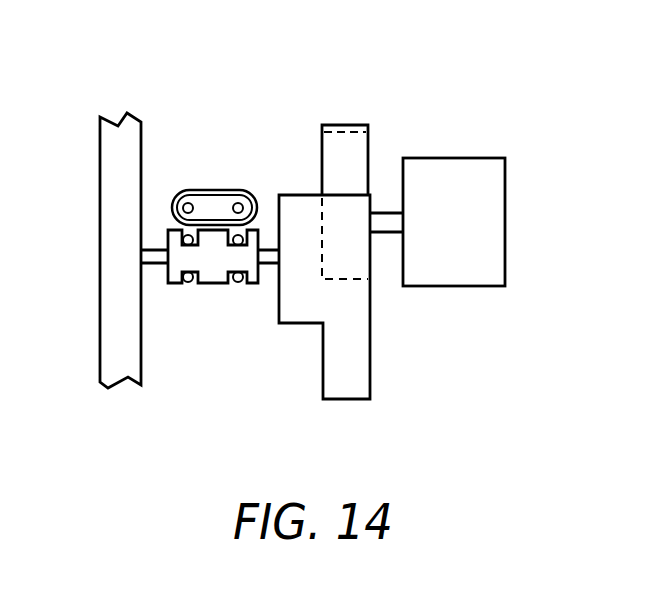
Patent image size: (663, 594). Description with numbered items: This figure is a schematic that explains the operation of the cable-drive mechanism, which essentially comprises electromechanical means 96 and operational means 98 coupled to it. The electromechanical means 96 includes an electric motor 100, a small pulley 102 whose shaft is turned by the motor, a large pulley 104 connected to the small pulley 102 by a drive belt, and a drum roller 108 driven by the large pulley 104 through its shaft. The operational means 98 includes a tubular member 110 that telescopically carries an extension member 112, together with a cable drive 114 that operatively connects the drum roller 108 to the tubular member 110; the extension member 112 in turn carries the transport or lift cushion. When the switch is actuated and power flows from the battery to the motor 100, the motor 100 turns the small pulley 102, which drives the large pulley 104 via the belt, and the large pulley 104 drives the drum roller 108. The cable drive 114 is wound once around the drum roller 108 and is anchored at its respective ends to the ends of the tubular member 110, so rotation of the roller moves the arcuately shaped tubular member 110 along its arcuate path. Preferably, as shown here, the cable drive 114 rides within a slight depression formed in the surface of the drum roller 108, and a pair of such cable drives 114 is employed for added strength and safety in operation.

The electromechanical means 96 is at (208, 386).
The operational means 98 is at (207, 140).
The electric motor 100 is at (437, 157).
The small pulley 102 is at (342, 123).
The large pulley 104 is at (322, 362).
The drum roller 108 is at (208, 285).
The tubular member 110 is at (173, 198).
The extension member 112 is at (242, 197).
The cable drive 114 is at (235, 284).